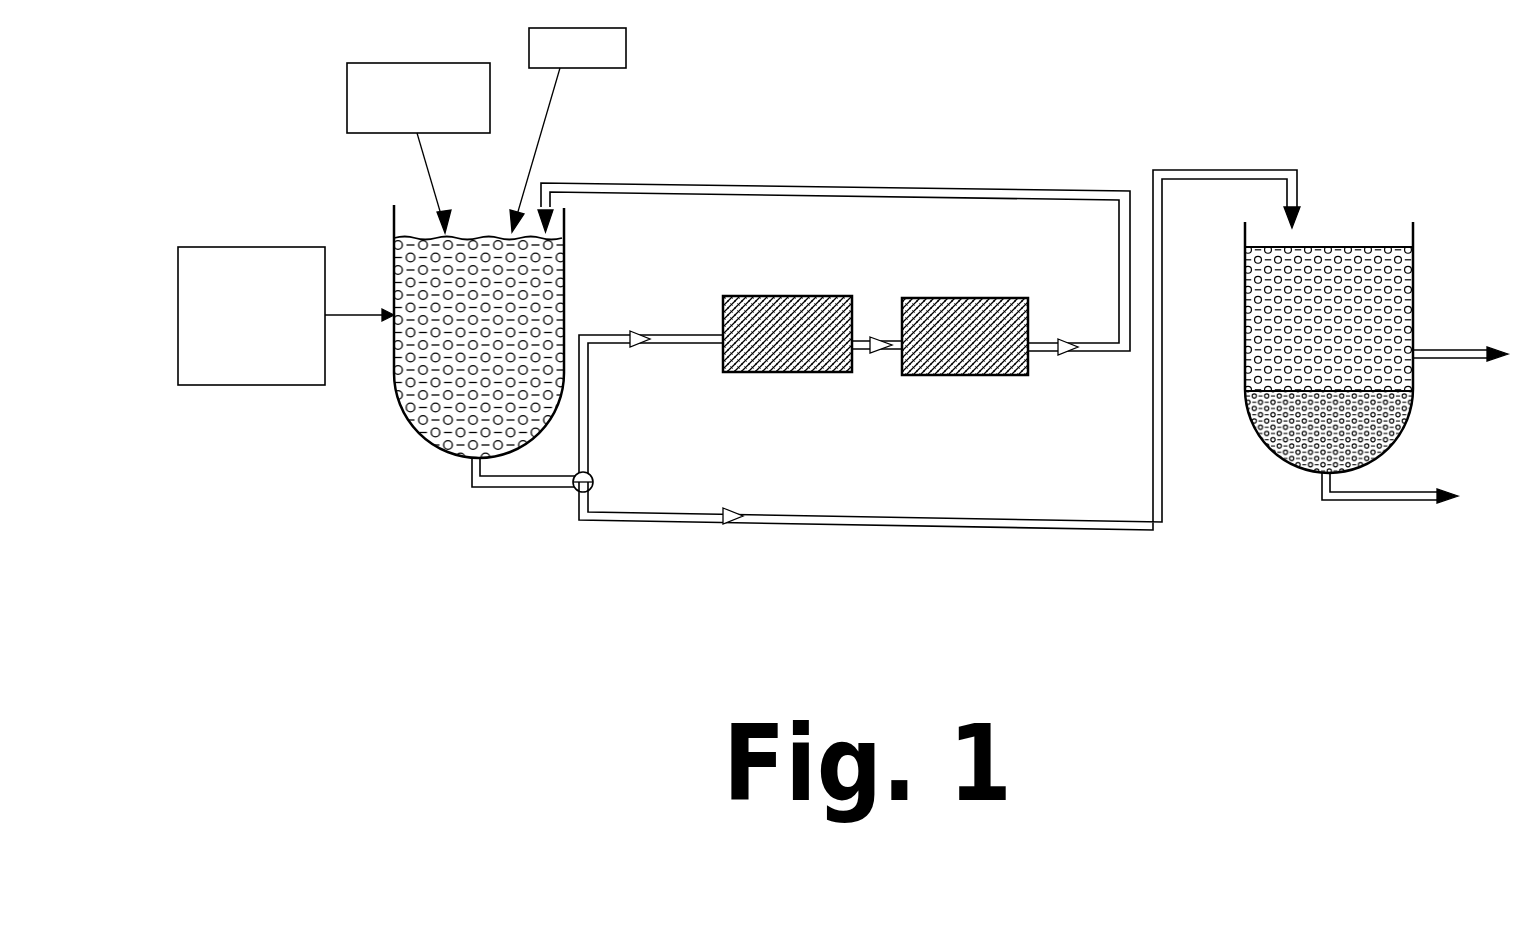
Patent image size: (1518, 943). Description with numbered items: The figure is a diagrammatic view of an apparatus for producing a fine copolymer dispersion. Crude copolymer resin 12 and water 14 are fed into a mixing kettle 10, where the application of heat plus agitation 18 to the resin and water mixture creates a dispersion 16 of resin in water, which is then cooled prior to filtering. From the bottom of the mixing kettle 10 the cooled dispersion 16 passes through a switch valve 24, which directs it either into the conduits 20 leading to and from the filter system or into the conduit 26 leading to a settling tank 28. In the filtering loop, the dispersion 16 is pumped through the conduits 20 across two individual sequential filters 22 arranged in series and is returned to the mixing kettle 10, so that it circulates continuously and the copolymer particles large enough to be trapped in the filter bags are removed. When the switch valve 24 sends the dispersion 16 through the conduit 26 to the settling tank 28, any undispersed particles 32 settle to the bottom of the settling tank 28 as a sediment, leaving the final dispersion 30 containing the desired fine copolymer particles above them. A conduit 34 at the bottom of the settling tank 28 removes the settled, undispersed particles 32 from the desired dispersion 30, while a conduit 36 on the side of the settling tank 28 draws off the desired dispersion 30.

The mixing kettle 10 is at (415, 440).
The crude copolymer resin 12 is at (340, 114).
The water 14 is at (672, 67).
The dispersion 16 is at (435, 298).
The application of heat plus agitation 18 is at (170, 332).
The conduits 20 is at (750, 195).
The sequential filter 22 is at (813, 409).
The switch valve 24 is at (657, 456).
The conduit 26 is at (978, 522).
The settling tank 28 is at (1247, 415).
The final dispersion 30 is at (1265, 305).
The undispersed particles 32 is at (1387, 428).
The conduit 34 is at (1383, 502).
The conduit 36 is at (1448, 350).